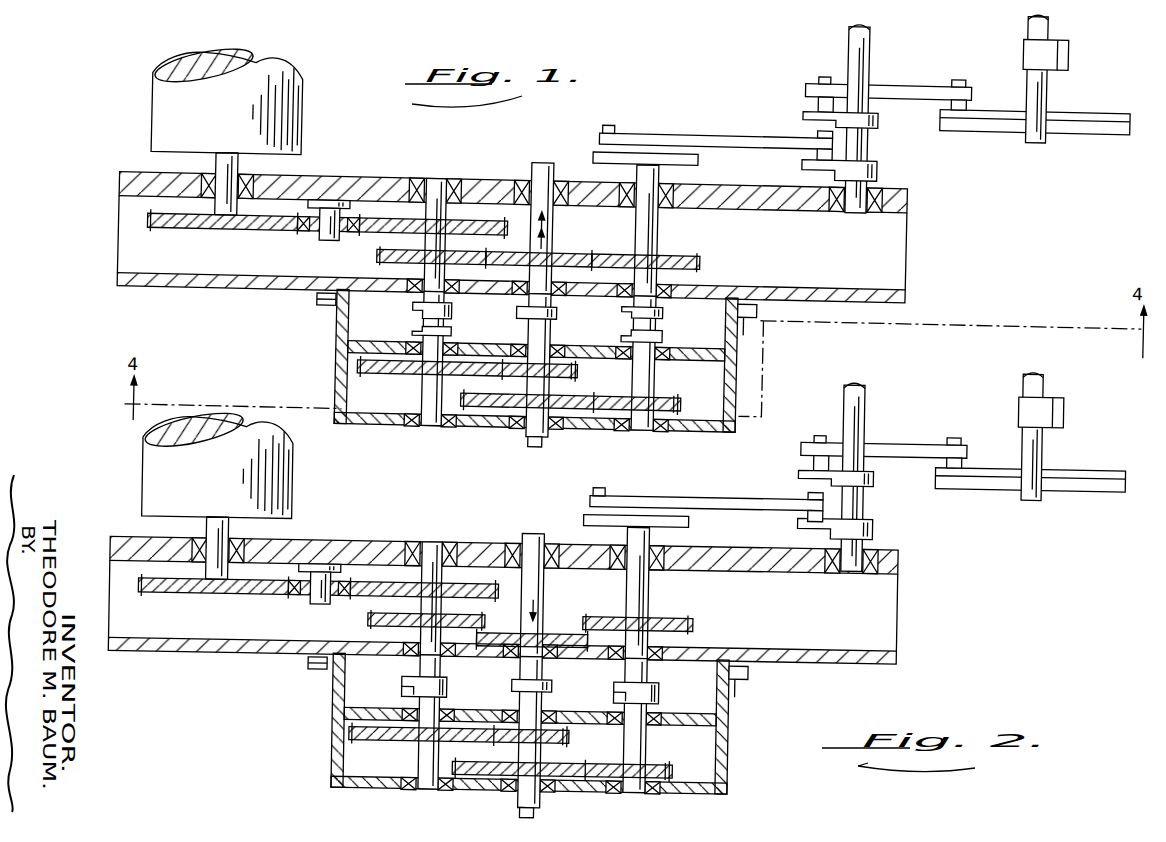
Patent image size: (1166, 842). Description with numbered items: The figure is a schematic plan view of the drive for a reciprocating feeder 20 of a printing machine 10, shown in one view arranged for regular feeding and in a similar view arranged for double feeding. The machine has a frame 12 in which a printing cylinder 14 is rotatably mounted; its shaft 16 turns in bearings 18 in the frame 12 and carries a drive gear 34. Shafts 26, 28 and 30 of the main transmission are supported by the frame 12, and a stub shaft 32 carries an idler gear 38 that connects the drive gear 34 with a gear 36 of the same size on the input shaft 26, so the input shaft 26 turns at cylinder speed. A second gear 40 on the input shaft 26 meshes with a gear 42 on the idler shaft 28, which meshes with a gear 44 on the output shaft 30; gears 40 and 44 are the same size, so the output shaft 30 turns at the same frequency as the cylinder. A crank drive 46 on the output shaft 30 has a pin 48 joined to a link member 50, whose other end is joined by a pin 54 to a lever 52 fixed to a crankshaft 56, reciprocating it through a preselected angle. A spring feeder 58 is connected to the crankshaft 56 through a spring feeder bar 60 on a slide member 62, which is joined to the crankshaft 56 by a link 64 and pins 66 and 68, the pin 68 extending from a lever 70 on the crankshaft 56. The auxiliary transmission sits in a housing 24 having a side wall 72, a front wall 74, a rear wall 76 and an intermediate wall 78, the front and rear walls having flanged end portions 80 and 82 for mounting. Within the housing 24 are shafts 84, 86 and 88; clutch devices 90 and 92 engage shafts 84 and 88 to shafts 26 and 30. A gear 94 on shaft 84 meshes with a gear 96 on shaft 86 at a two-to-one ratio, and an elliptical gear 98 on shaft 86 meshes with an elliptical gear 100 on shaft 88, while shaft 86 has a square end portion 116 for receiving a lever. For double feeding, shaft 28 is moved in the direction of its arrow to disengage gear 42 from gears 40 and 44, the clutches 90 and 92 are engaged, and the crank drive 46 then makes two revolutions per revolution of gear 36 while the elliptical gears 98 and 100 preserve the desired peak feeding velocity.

In FIG. 1, the printing machine 10 is at (131, 145).
In FIG. 2, the printing machine 10 is at (76, 511).
In FIG. 1, the frame 12 is at (119, 203).
In FIG. 2, the frame 12 is at (474, 599).
In FIG. 1, the printing cylinder 14 is at (149, 118).
In FIG. 2, the printing cylinder 14 is at (172, 460).
In FIG. 1, the shaft 16 is at (216, 212).
In FIG. 2, the shaft 16 is at (195, 548).
In FIG. 1, the bearings 18 is at (238, 177).
In FIG. 2, the bearings 18 is at (244, 526).
In FIG. 1, the reciprocating feeder 20 is at (926, 165).
In FIG. 2, the reciprocating feeder 20 is at (963, 541).
In FIG. 1, the housing 24 is at (517, 376).
In FIG. 2, the housing 24 is at (509, 740).
In FIG. 1, the input shaft 26 is at (436, 183).
In FIG. 2, the input shaft 26 is at (443, 584).
In FIG. 1, the idler shaft 28 is at (539, 169).
In FIG. 2, the idler shaft 28 is at (534, 582).
In FIG. 1, the output shaft 30 is at (648, 224).
In FIG. 2, the output shaft 30 is at (655, 593).
In FIG. 1, the stub shaft 32 is at (330, 246).
In FIG. 2, the stub shaft 32 is at (316, 599).
In FIG. 1, the drive gear 34 is at (258, 235).
In FIG. 2, the drive gear 34 is at (318, 597).
In FIG. 1, the gear 36 is at (397, 225).
In FIG. 2, the gear 36 is at (343, 574).
In FIG. 1, the idler gear 38 is at (300, 236).
In FIG. 2, the idler gear 38 is at (305, 600).
In FIG. 1, the gear 40 is at (385, 258).
In FIG. 2, the gear 40 is at (410, 625).
In FIG. 1, the gear 42 is at (570, 256).
In FIG. 2, the gear 42 is at (532, 621).
In FIG. 1, the gear 44 is at (686, 252).
In FIG. 2, the gear 44 is at (653, 611).
In FIG. 1, the crank drive 46 is at (698, 155).
In FIG. 2, the crank drive 46 is at (663, 526).
In FIG. 1, the pin 48 is at (603, 126).
In FIG. 2, the pin 48 is at (617, 481).
In FIG. 1, the link member 50 is at (695, 134).
In FIG. 2, the link member 50 is at (707, 492).
In FIG. 1, the lever 52 is at (876, 164).
In FIG. 2, the lever 52 is at (857, 525).
In FIG. 1, the pin 54 is at (810, 126).
In FIG. 2, the pin 54 is at (798, 498).
In FIG. 1, the crankshaft 56 is at (842, 30).
In FIG. 2, the crankshaft 56 is at (832, 476).
In FIG. 1, the spring feeder 58 is at (1046, 40).
In FIG. 2, the spring feeder 58 is at (1061, 413).
In FIG. 1, the spring feeder bar 60 is at (1044, 76).
In FIG. 2, the spring feeder bar 60 is at (1062, 437).
In FIG. 1, the slide member 62 is at (1066, 122).
In FIG. 2, the slide member 62 is at (1030, 498).
In FIG. 1, the link 64 is at (910, 79).
In FIG. 2, the link 64 is at (884, 437).
In FIG. 1, the pin 66 is at (958, 88).
In FIG. 2, the pin 66 is at (971, 448).
In FIG. 1, the pin 68 is at (802, 78).
In FIG. 2, the pin 68 is at (793, 453).
In FIG. 1, the lever 70 is at (875, 111).
In FIG. 2, the lever 70 is at (852, 485).
In FIG. 1, the side wall 72 is at (389, 428).
In FIG. 2, the side wall 72 is at (528, 801).
In FIG. 1, the front wall 74 is at (338, 388).
In FIG. 2, the front wall 74 is at (313, 719).
In FIG. 1, the rear wall 76 is at (742, 373).
In FIG. 2, the rear wall 76 is at (751, 727).
In FIG. 1, the intermediate wall 78 is at (684, 346).
In FIG. 2, the intermediate wall 78 is at (530, 700).
In FIG. 1, the flanged end portion 80 is at (318, 305).
In FIG. 2, the flanged end portion 80 is at (289, 668).
In FIG. 1, the flanged end portion 82 is at (763, 303).
In FIG. 2, the flanged end portion 82 is at (763, 679).
In FIG. 1, the shaft 84 is at (430, 390).
In FIG. 2, the shaft 84 is at (408, 721).
In FIG. 1, the shaft 86 is at (551, 388).
In FIG. 2, the shaft 86 is at (522, 735).
In FIG. 1, the shaft 88 is at (652, 372).
In FIG. 2, the shaft 88 is at (649, 725).
In FIG. 1, the clutch device 90 is at (414, 316).
In FIG. 2, the clutch device 90 is at (405, 683).
In FIG. 1, the clutch device 92 is at (624, 316).
In FIG. 2, the clutch device 92 is at (617, 689).
In FIG. 1, the gear 94 is at (358, 370).
In FIG. 2, the gear 94 is at (426, 731).
In FIG. 1, the gear 96 is at (581, 366).
In FIG. 2, the gear 96 is at (589, 736).
In FIG. 1, the elliptical gear 98 is at (503, 392).
In FIG. 2, the elliptical gear 98 is at (562, 760).
In FIG. 1, the elliptical gear 100 is at (689, 381).
In FIG. 2, the elliptical gear 100 is at (688, 762).
In FIG. 1, the square end portion 116 is at (552, 442).
In FIG. 2, the square end portion 116 is at (561, 814).